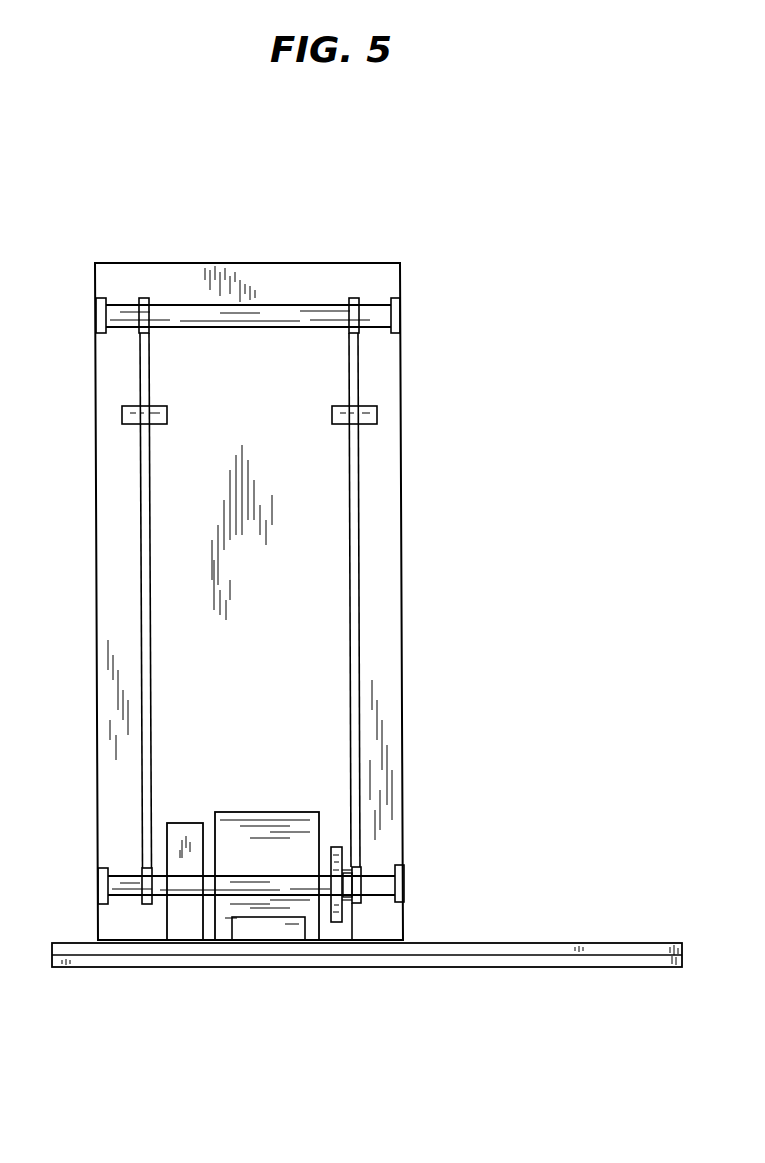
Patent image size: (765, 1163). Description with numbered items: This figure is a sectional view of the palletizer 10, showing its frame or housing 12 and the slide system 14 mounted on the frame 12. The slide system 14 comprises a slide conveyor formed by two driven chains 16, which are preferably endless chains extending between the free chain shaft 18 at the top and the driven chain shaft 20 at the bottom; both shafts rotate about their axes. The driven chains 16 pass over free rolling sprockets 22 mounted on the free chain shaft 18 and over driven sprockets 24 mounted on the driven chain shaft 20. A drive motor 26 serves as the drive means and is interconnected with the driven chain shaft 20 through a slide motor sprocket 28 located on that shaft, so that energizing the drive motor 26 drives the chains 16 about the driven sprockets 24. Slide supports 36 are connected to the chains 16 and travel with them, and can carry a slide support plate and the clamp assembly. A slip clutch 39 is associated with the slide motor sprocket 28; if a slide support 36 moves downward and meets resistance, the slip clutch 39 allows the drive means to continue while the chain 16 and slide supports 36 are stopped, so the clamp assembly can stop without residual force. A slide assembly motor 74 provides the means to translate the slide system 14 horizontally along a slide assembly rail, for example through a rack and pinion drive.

The palletizer 10 is at (566, 510).
The frame 12 is at (403, 665).
The slide system 14 is at (484, 717).
The driven chain 16 is at (141, 586).
The free chain shaft 18 is at (372, 306).
The driven chain shaft 20 is at (378, 895).
The free rolling sprocket 22 is at (138, 298).
The driven sprocket 24 is at (150, 905).
The drive motor 26 is at (265, 812).
The slide motor sprocket 28 is at (335, 923).
The slide support 36 is at (168, 412).
The slip clutch 39 is at (352, 867).
The slide assembly motor 74 is at (186, 823).